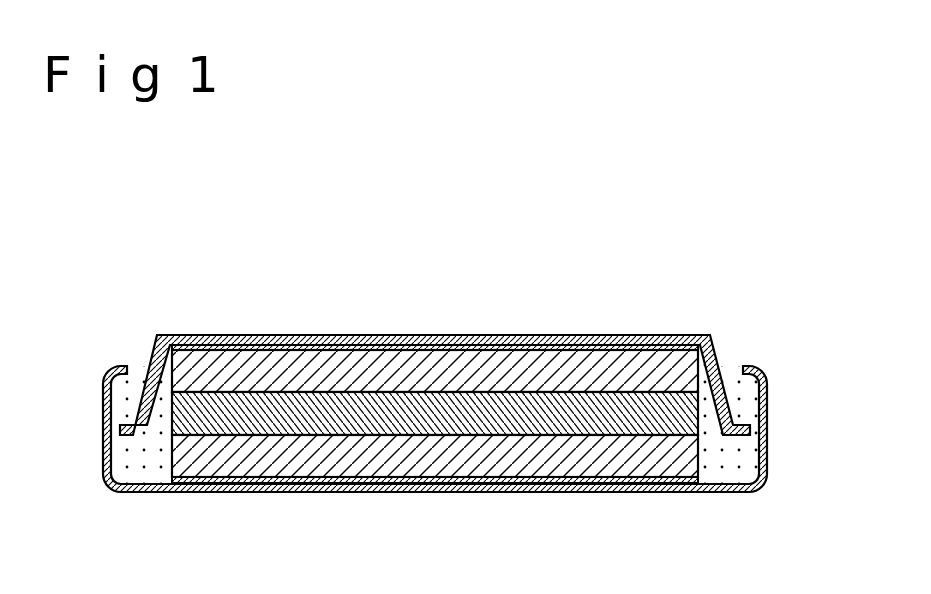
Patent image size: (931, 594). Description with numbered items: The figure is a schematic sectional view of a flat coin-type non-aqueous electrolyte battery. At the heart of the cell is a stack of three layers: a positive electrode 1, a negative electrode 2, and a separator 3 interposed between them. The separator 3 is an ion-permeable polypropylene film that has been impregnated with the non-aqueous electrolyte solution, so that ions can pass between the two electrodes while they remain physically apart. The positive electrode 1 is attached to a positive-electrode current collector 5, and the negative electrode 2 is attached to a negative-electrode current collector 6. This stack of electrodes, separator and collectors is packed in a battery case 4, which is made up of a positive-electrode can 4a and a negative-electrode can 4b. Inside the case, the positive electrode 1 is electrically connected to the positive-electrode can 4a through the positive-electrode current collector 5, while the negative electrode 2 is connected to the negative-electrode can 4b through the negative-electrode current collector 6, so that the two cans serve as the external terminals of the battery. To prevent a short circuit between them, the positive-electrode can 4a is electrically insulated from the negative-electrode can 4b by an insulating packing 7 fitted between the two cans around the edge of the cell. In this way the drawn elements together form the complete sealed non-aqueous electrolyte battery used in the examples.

The positive electrode 1 is at (622, 455).
The negative electrode 2 is at (615, 360).
The separator 3 is at (657, 400).
The battery case 4 is at (502, 412).
The positive-electrode can 4a is at (767, 417).
The negative-electrode can 4b is at (717, 340).
The positive-electrode current collector 5 is at (433, 477).
The negative-electrode current collector 6 is at (415, 350).
The insulating packing 7 is at (152, 457).